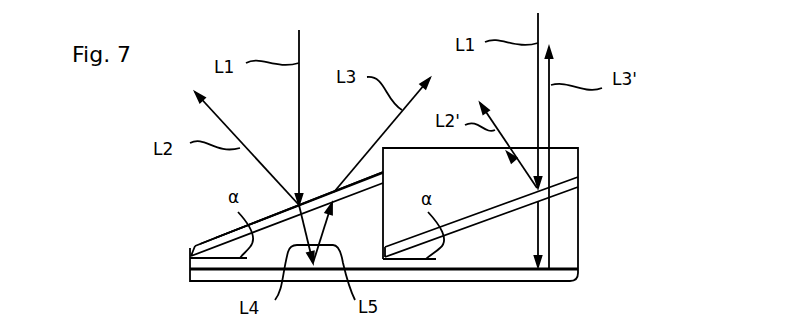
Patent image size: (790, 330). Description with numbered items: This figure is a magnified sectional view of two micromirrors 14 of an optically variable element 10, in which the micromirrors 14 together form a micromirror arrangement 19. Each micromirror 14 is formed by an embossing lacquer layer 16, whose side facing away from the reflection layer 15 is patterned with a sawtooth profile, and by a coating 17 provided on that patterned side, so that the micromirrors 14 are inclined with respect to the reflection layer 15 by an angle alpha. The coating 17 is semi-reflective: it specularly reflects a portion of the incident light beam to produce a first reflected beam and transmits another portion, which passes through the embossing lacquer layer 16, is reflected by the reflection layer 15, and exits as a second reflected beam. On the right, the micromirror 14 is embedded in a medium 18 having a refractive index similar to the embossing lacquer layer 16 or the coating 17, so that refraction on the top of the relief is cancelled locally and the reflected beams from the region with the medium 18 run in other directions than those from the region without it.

The optically variable element 10 is at (188, 268).
The micromirror 14 is at (227, 232).
The reflection layer 15 is at (578, 278).
The embossing lacquer layer 16 is at (578, 233).
The coating 17 is at (197, 245).
The medium 18 is at (578, 157).
The micromirror arrangement 19 is at (200, 236).